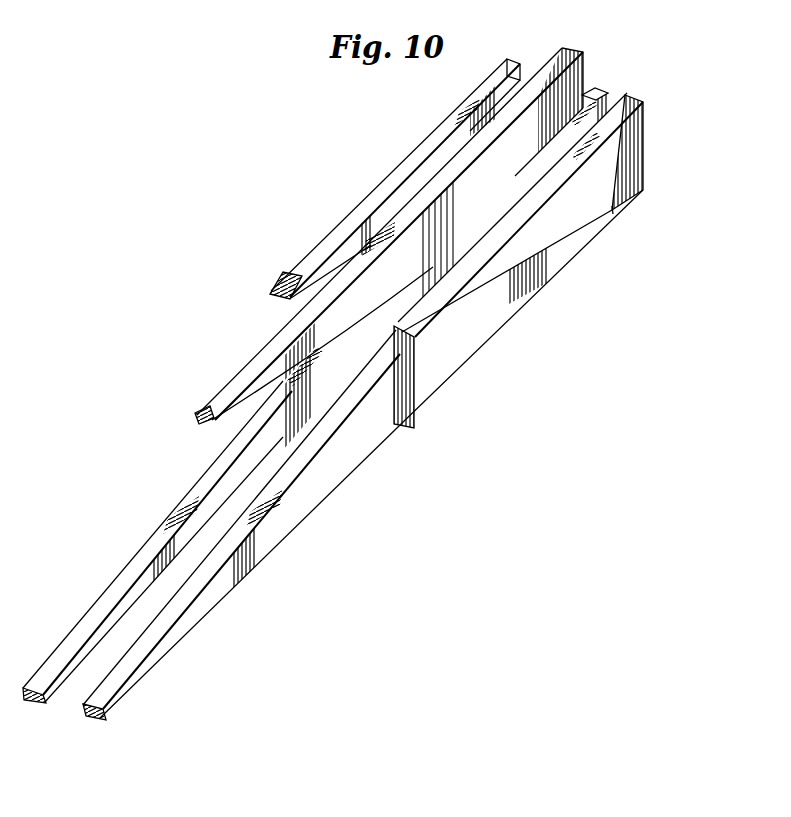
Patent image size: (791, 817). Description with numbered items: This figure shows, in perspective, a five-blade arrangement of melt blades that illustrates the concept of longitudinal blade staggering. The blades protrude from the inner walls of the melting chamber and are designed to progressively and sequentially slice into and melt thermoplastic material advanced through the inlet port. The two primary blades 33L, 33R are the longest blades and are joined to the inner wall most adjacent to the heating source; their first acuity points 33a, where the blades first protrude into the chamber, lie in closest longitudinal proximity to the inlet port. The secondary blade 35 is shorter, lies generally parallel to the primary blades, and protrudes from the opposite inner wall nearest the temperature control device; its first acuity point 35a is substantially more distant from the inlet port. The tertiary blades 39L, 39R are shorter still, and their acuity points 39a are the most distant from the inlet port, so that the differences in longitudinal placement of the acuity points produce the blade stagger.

The tertiary blade 39L is at (432, 132).
The tertiary blade 39R is at (645, 163).
The first acuity point of tertiary blade 39a is at (270, 295).
The secondary blade 35 is at (240, 372).
The first acuity point of secondary blade 35a is at (196, 421).
The primary blade 33L is at (117, 582).
The primary blade 33R is at (277, 543).
The first acuity point of primary blade 33a is at (86, 722).